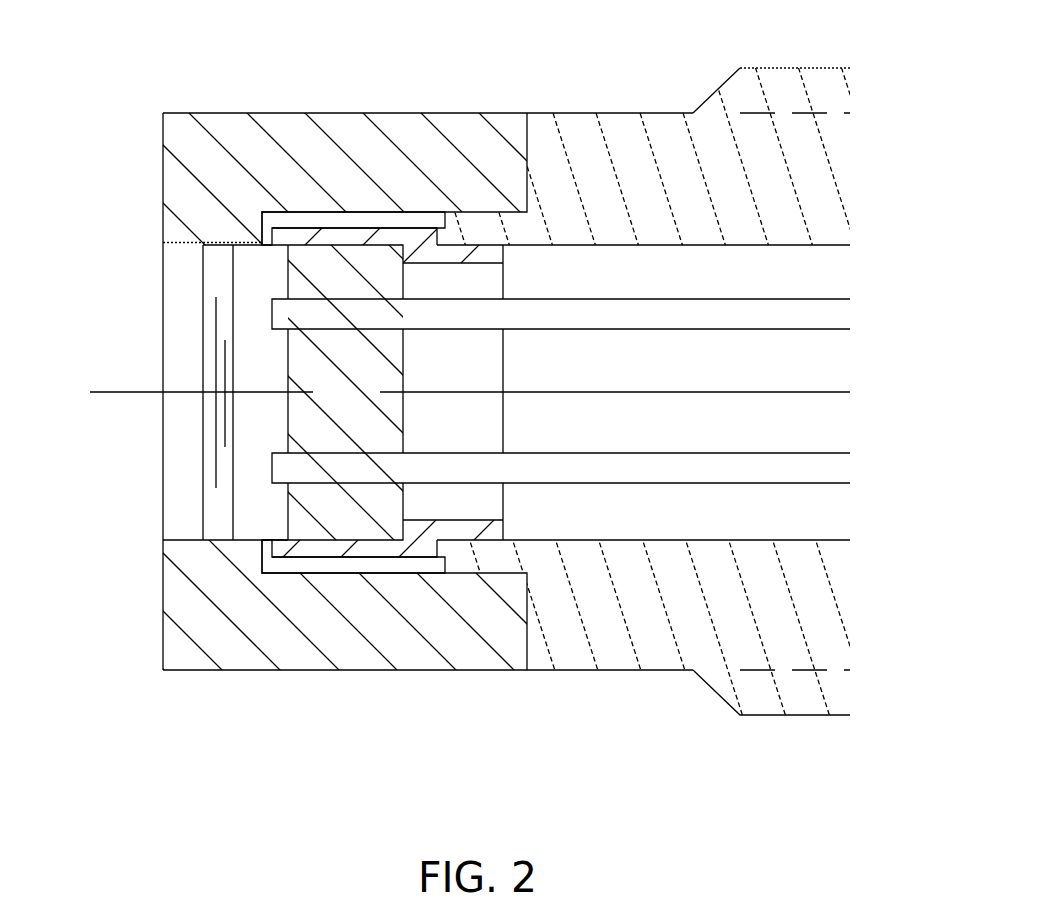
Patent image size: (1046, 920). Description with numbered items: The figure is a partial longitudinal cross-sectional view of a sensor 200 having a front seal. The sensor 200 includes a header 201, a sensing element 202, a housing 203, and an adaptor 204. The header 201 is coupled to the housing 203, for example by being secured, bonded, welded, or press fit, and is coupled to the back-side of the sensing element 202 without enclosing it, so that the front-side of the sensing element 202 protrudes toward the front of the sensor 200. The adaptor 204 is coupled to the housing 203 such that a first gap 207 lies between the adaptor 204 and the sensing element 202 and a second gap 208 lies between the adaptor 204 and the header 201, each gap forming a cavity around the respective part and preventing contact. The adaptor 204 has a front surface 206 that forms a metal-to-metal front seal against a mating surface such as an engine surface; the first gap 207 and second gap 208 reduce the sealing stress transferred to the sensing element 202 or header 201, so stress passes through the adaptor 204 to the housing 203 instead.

The sensor 200 is at (497, 31).
The header 201 is at (366, 398).
The sensing element 202 is at (210, 413).
The housing 203 is at (759, 620).
The adaptor 204 is at (362, 630).
The front surface 206 is at (137, 611).
The first gap 207 is at (207, 253).
The second gap 208 is at (324, 203).